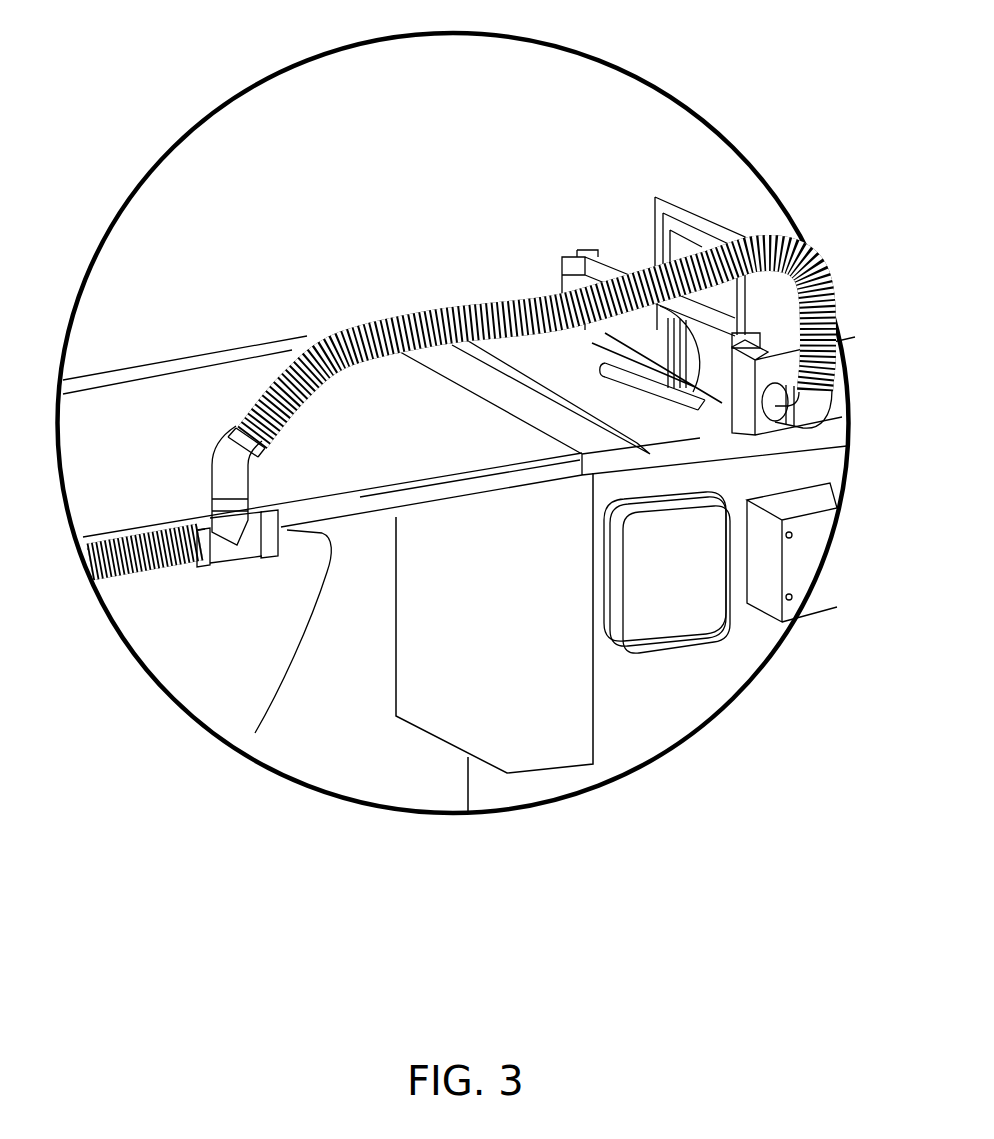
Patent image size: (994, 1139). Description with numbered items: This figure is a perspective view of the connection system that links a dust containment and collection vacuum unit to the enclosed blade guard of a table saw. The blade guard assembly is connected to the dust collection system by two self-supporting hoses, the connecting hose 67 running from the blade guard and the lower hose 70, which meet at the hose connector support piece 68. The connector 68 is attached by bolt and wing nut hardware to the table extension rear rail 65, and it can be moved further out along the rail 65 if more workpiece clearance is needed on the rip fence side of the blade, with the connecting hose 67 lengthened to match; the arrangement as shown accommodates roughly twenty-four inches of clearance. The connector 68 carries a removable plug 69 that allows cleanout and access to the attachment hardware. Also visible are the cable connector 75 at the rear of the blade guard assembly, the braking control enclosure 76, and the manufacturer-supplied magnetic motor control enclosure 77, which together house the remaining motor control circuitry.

The table extension rear rail 65 is at (463, 490).
The connecting hose 67 is at (486, 302).
The hose connector support piece 68 is at (237, 560).
The removable plug 69 is at (255, 733).
The self-supporting hose 70 is at (155, 575).
The cable connector 75 is at (833, 303).
The braking control enclosure 76 is at (812, 537).
The magnetic motor control enclosure 77 is at (678, 640).